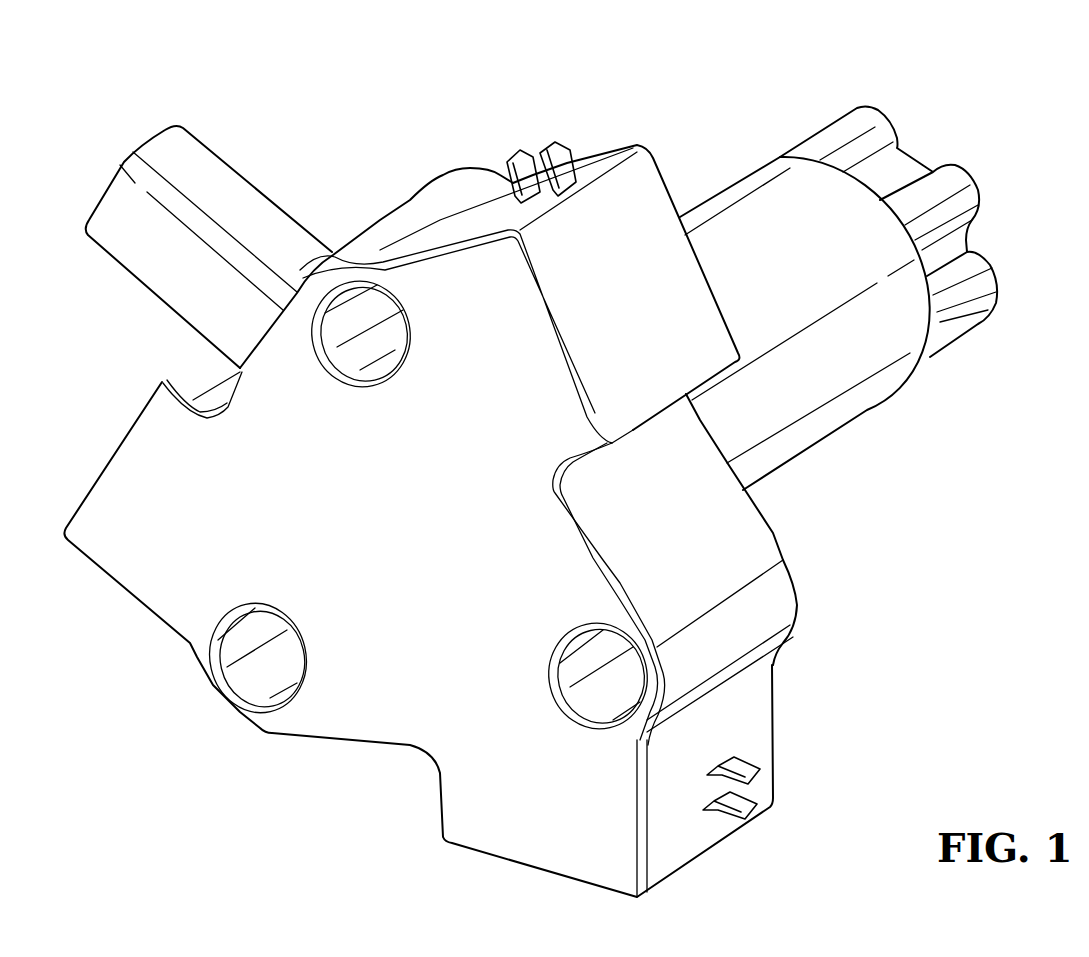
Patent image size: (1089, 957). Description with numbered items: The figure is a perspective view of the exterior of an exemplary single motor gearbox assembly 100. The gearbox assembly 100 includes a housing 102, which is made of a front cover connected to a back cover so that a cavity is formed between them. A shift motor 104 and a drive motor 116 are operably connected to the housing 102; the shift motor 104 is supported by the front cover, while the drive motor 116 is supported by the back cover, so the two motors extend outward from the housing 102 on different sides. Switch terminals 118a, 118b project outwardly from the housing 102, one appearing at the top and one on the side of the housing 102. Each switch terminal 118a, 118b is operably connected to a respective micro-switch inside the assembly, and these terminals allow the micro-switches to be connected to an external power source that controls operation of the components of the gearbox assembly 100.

The single motor gearbox assembly 100 is at (724, 140).
The housing 102 is at (403, 678).
The shift motor 104 is at (227, 197).
The drive motor 116 is at (868, 355).
The switch terminal 118a is at (558, 154).
The switch terminal 118b is at (745, 770).